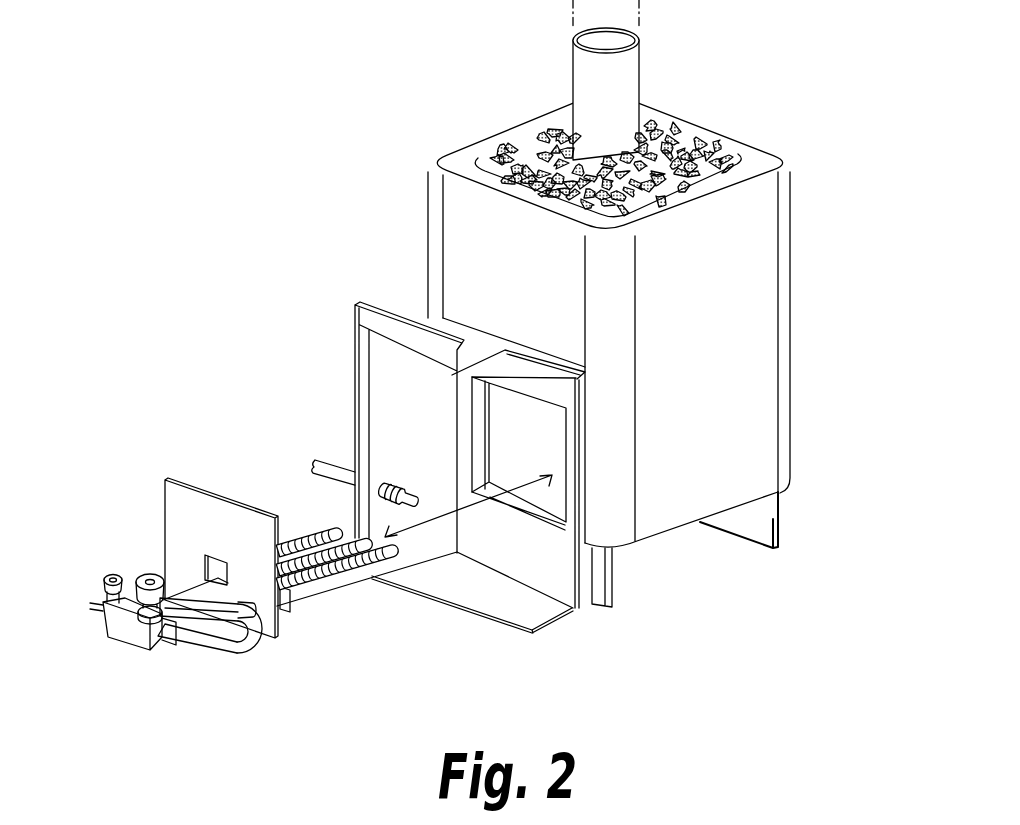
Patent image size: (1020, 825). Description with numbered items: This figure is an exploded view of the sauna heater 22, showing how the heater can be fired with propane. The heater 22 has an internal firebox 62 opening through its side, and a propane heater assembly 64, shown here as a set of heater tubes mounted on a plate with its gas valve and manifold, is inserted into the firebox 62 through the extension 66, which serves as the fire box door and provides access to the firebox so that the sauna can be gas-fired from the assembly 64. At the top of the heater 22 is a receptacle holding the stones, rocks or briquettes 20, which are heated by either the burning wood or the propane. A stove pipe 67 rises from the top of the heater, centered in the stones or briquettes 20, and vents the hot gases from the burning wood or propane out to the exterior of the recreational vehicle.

The stones, rocks or briquettes 20 is at (700, 147).
The heater 22 is at (789, 327).
The internal firebox 62 is at (547, 440).
The propane heater assembly 64 is at (328, 595).
The extension 66 is at (428, 327).
The stove pipe 67 is at (630, 78).